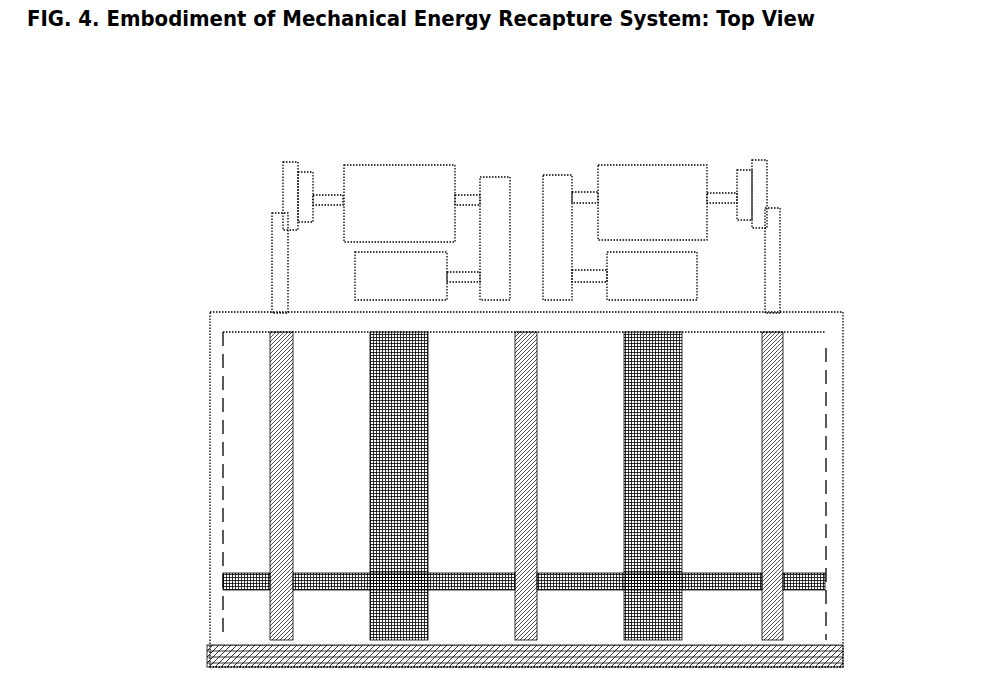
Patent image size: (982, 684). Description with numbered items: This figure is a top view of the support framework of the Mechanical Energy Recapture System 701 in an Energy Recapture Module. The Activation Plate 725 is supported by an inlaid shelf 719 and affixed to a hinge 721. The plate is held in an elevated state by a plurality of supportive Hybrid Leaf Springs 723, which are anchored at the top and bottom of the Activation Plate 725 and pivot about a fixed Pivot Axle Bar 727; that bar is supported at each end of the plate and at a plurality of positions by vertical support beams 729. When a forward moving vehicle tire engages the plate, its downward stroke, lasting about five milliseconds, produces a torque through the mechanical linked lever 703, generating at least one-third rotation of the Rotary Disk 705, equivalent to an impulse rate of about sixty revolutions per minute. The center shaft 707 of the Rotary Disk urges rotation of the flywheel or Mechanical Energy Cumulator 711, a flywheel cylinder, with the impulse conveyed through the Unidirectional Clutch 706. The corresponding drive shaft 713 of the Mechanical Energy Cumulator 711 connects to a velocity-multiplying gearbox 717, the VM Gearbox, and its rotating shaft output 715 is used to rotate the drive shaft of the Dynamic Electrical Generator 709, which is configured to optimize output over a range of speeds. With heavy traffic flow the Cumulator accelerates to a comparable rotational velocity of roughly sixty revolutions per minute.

The Mechanical Energy Recapture System 701 is at (173, 295).
The mechanical linked lever 703 is at (273, 245).
The Rotary Disk 705 is at (287, 197).
The Unidirectional Clutch 706 is at (307, 172).
The center shaft 707 is at (333, 197).
The Dynamic Electrical Generator 709 is at (355, 273).
The Mechanical Energy Cumulator 711 is at (397, 167).
The drive shaft 713 is at (467, 195).
The rotating shaft output 715 is at (463, 282).
The velocity-multiplying gearbox 717 is at (495, 177).
The inlaid shelf 719 is at (223, 477).
The hinge 721 is at (210, 657).
The Hybrid Leaf Springs 723 is at (270, 488).
The Activation Plate 725 is at (843, 480).
The Pivot Axle Bar 727 is at (720, 573).
The vertical support beams 729 is at (437, 500).